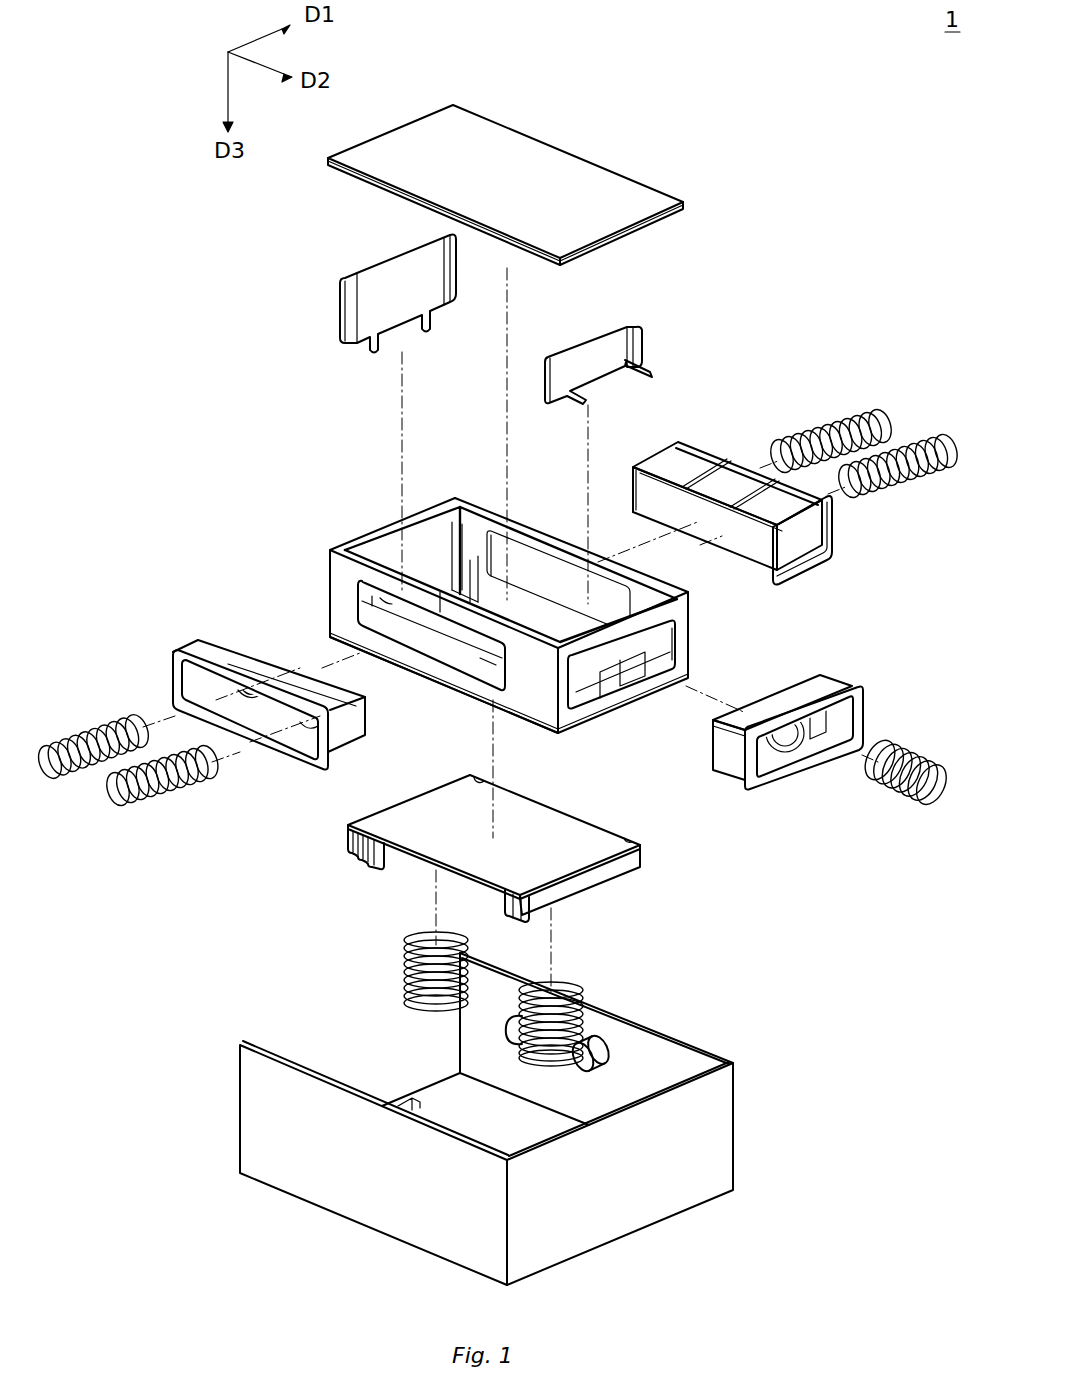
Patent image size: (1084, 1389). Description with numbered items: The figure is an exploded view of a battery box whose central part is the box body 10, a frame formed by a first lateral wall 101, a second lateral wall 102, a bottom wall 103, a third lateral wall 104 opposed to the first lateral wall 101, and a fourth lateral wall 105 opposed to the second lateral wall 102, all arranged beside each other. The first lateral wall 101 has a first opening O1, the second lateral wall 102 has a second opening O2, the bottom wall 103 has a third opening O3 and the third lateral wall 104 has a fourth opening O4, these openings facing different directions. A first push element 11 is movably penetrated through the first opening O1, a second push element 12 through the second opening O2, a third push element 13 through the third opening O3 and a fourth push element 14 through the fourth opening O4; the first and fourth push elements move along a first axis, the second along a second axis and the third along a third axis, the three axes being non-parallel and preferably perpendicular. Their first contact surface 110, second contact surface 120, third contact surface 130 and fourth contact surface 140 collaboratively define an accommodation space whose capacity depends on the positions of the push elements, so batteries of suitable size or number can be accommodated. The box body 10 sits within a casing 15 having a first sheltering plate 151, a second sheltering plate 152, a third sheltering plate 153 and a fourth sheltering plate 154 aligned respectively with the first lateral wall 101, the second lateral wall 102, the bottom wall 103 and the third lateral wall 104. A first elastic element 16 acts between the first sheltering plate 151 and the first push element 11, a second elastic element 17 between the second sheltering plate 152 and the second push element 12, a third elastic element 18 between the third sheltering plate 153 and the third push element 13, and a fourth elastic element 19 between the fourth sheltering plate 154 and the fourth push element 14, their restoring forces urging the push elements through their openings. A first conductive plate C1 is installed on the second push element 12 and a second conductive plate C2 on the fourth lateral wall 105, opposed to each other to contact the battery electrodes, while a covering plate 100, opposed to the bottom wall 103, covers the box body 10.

The box body 10 is at (511, 605).
The covering plate 100 is at (534, 150).
The first lateral wall 101 is at (516, 546).
The second lateral wall 102 is at (690, 604).
The bottom wall 103 is at (577, 733).
The third lateral wall 104 is at (338, 567).
The fourth lateral wall 105 is at (375, 557).
The first push element 11 is at (805, 558).
The first contact surface 110 is at (632, 476).
The second push element 12 is at (827, 690).
The second contact surface 120 is at (748, 698).
The third push element 13 is at (597, 878).
The third contact surface 130 is at (517, 834).
The fourth push element 14 is at (217, 652).
The fourth contact surface 140 is at (283, 648).
The casing 15 is at (439, 1119).
The first sheltering plate 151 is at (660, 1060).
The second sheltering plate 152 is at (647, 1207).
The third sheltering plate 153 is at (420, 1082).
The fourth sheltering plate 154 is at (252, 1120).
The first elastic element 16 is at (932, 445).
The second elastic element 17 is at (893, 795).
The third elastic element 18 is at (512, 1036).
The fourth elastic element 19 is at (110, 792).
The first conductive plate C1 is at (638, 337).
The second conductive plate C2 is at (345, 307).
The first opening O1 is at (548, 570).
The second opening O2 is at (625, 663).
The third opening O3 is at (494, 665).
The fourth opening O4 is at (432, 654).